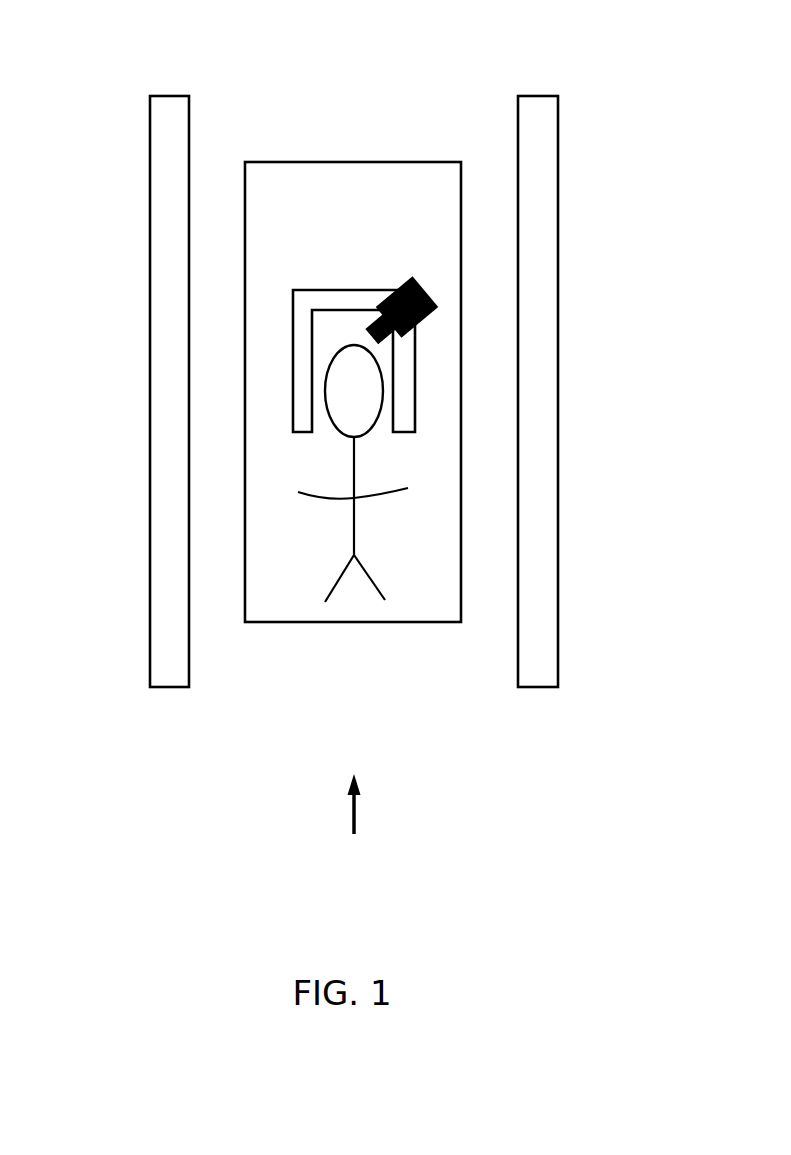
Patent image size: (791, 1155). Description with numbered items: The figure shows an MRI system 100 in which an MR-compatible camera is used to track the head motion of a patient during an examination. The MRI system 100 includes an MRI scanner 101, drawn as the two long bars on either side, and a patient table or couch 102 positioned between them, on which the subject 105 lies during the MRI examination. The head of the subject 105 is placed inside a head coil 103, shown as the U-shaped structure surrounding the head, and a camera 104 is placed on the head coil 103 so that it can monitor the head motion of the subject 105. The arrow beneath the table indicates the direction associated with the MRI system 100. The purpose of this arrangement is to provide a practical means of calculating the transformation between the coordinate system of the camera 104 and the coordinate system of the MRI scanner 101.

The MRI system 100 is at (353, 833).
The MRI scanner 101 is at (150, 557).
The patient table/couch 102 is at (264, 162).
The head coil 103 is at (296, 289).
The camera 104 is at (410, 276).
The subject 105 is at (356, 508).